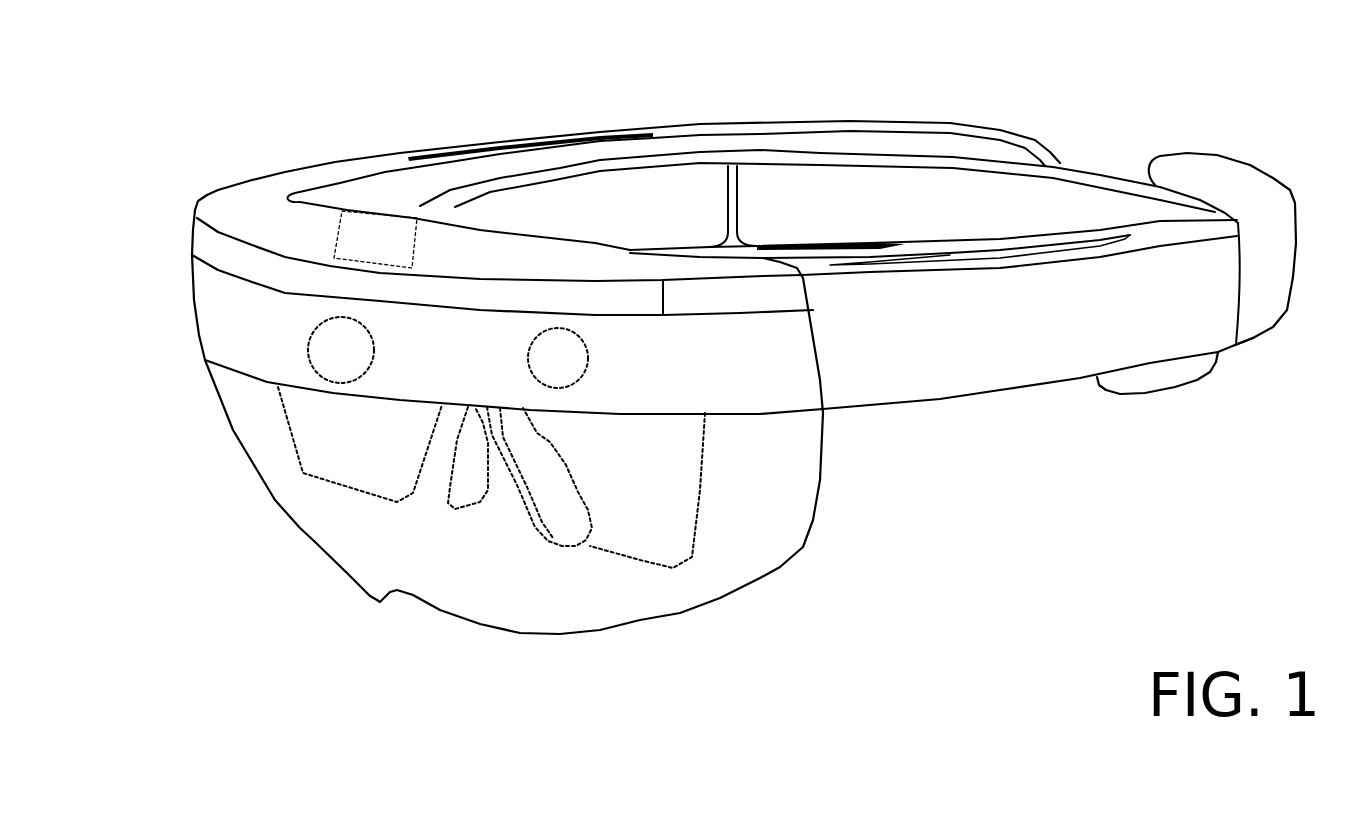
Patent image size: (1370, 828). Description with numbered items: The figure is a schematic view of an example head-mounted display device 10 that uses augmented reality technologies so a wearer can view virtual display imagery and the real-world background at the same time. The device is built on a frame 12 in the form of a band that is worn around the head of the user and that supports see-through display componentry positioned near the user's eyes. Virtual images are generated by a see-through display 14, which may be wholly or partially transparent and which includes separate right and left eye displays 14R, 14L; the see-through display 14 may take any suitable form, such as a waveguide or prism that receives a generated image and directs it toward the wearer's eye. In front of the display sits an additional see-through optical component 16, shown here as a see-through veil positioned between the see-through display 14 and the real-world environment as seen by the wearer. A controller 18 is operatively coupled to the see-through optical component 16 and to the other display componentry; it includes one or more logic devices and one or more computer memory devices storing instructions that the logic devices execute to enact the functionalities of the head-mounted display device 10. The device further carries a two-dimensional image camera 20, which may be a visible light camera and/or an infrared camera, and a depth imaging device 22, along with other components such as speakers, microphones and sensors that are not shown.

The head-mounted display device 10 is at (1198, 62).
The frame 12 is at (1072, 330).
The see-through display 14 is at (702, 462).
The right eye display 14R is at (400, 482).
The left eye display 14L is at (670, 547).
The see-through optical component 16 is at (812, 537).
The controller 18 is at (390, 249).
The two-dimensional image camera 20 is at (573, 370).
The depth imaging device 22 is at (356, 362).